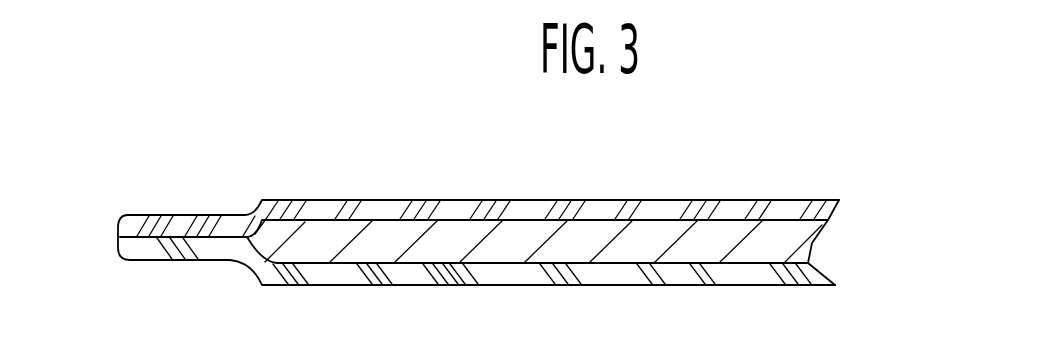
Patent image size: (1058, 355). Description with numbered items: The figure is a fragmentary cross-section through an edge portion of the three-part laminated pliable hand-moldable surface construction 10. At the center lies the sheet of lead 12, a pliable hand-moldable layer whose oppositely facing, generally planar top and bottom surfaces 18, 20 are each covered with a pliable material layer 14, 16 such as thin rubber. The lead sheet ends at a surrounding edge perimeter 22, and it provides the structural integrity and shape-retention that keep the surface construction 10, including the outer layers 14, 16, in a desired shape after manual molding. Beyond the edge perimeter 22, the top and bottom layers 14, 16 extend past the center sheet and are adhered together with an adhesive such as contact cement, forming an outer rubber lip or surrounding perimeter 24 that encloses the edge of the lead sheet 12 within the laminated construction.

The surface construction 10 is at (512, 218).
The sheet of lead 12 is at (818, 240).
The pliable material layer 14 is at (387, 199).
The pliable material layer 16 is at (442, 286).
The top planar surface 18 is at (611, 218).
The bottom planar surface 20 is at (638, 264).
The edge perimeter 22 is at (255, 236).
The surrounding perimeter 24 is at (176, 265).